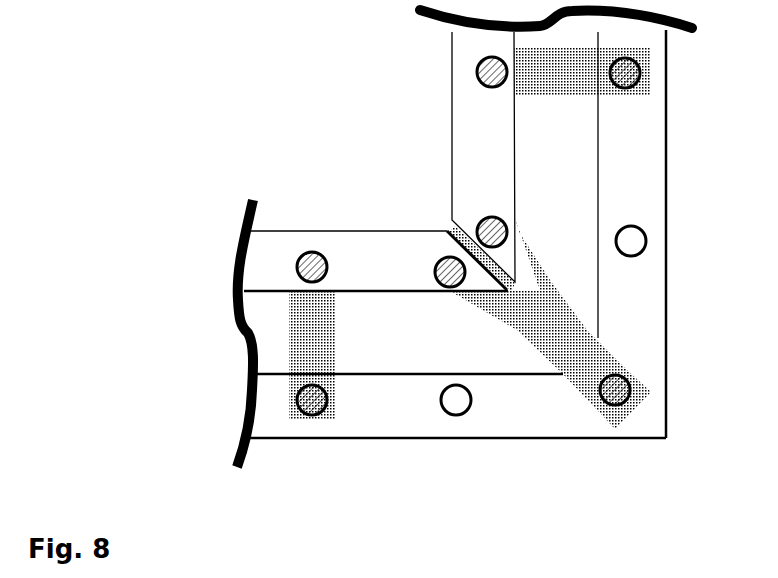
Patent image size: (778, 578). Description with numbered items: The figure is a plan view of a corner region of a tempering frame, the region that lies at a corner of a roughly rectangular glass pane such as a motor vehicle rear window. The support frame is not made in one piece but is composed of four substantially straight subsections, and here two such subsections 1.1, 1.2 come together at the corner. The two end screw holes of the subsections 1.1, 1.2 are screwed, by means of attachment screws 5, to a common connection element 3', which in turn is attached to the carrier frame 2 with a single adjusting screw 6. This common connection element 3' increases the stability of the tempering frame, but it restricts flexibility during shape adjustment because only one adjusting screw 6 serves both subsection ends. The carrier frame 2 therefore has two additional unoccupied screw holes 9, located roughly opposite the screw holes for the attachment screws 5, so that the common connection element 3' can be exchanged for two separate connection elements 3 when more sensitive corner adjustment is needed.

The subsection 1.1 is at (360, 247).
The subsection 1.2 is at (465, 150).
The carrier frame 2 is at (542, 407).
The connection element 3 is at (500, 275).
The common connection element 3' is at (584, 323).
The attachment screw 5 is at (482, 65).
The adjusting screw 6 is at (636, 78).
The unoccupied screw hole 9 is at (634, 244).